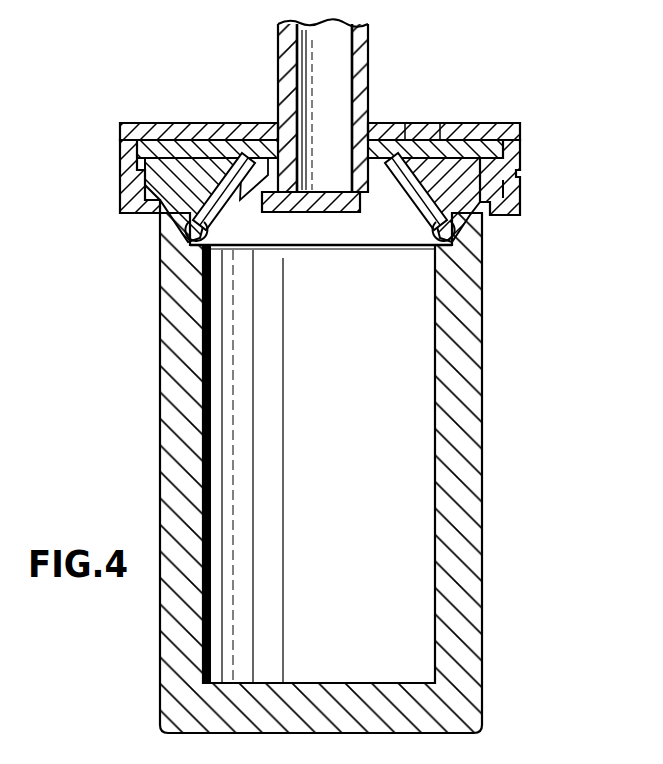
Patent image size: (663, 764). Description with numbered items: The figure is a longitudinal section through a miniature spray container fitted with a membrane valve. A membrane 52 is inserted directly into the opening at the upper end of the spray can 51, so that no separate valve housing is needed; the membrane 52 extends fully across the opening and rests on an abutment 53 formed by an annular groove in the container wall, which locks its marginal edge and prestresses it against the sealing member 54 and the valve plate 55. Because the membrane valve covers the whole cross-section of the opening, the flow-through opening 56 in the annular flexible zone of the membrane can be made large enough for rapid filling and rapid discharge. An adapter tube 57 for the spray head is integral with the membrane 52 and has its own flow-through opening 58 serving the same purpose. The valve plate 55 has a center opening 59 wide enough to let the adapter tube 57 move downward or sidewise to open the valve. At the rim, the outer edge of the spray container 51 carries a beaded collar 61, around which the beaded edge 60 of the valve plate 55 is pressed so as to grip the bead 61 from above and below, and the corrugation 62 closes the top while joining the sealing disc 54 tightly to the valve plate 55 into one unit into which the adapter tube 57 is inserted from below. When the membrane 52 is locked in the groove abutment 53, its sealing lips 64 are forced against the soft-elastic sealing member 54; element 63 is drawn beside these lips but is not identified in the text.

The spray can 51 is at (480, 267).
The membrane 52 is at (362, 195).
The abutment 53 is at (458, 237).
The sealing member 54 is at (520, 156).
The valve plate 55 is at (405, 123).
The flow-through opening 56 is at (423, 123).
The adapter tube 57 is at (283, 80).
The flow-through opening 58 is at (244, 123).
The center opening 59 is at (378, 123).
The beaded edge 60 is at (505, 188).
The beaded collar 61 is at (505, 194).
The corrugation 62 is at (522, 173).
The sealing ring 63 is at (188, 123).
The sealing lips 64 is at (216, 123).